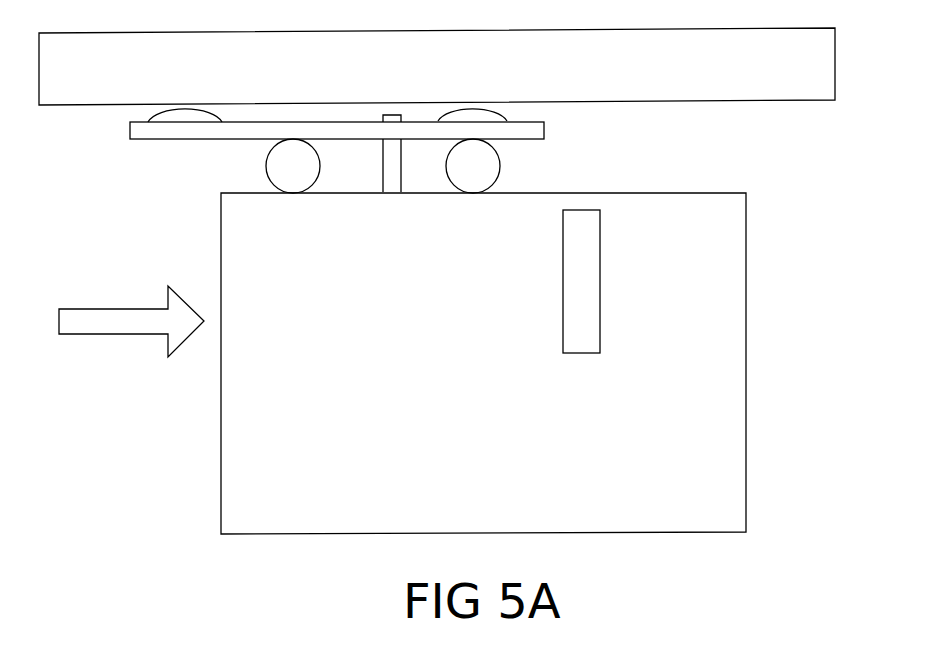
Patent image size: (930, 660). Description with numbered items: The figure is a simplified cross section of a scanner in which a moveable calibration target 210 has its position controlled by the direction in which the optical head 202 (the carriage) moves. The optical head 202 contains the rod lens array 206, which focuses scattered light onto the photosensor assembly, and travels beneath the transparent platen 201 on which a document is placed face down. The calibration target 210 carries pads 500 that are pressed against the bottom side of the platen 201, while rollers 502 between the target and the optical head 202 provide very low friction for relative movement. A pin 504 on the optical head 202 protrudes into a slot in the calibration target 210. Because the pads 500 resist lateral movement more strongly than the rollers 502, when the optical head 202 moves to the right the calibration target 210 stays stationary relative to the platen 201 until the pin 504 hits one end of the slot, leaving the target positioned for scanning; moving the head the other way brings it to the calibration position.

The transparent platen 201 is at (802, 100).
The pads 500 is at (148, 115).
The calibration target 210 is at (545, 138).
The pin 504 is at (383, 166).
The rollers 502 is at (268, 166).
The optical head 202 is at (750, 367).
The rod lens array 206 is at (605, 282).